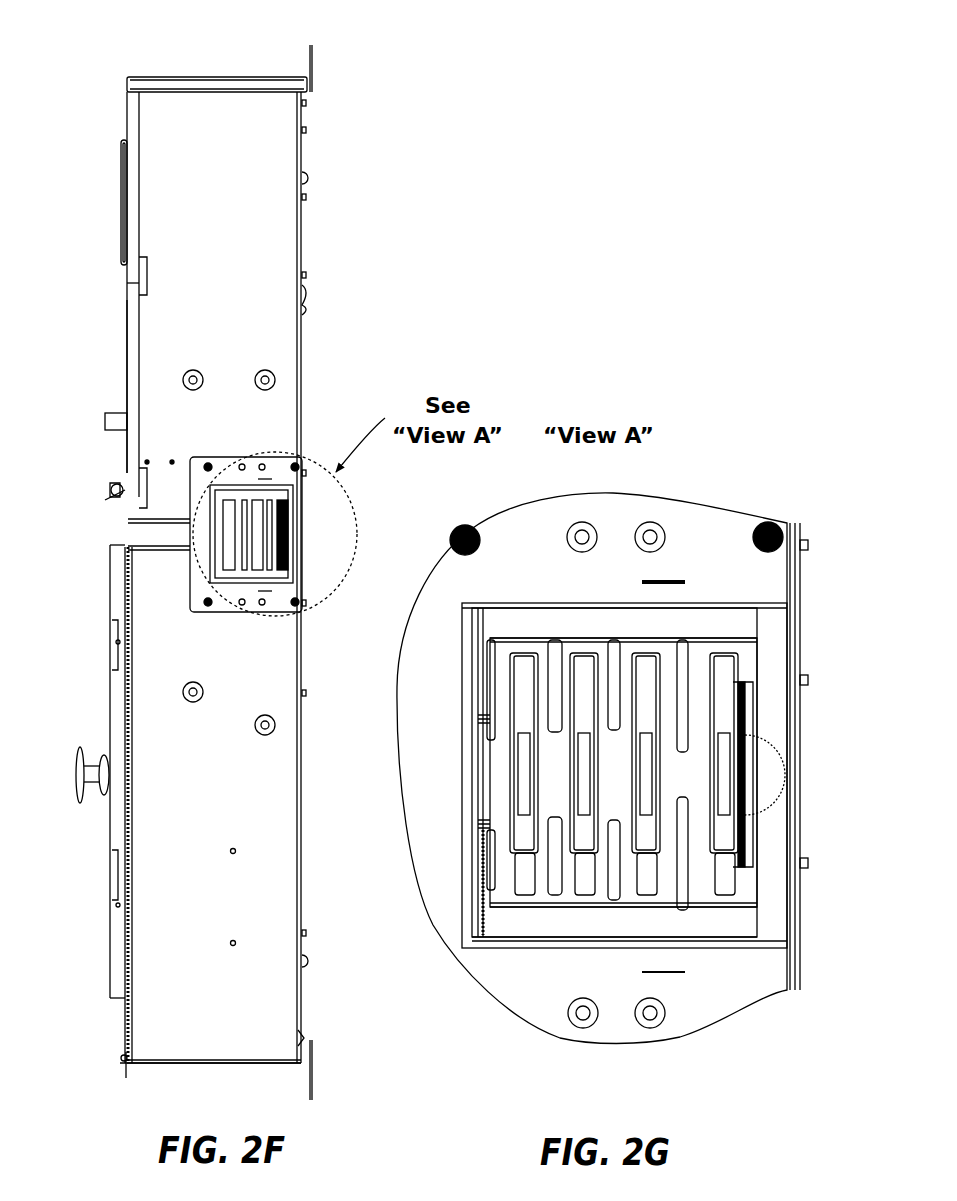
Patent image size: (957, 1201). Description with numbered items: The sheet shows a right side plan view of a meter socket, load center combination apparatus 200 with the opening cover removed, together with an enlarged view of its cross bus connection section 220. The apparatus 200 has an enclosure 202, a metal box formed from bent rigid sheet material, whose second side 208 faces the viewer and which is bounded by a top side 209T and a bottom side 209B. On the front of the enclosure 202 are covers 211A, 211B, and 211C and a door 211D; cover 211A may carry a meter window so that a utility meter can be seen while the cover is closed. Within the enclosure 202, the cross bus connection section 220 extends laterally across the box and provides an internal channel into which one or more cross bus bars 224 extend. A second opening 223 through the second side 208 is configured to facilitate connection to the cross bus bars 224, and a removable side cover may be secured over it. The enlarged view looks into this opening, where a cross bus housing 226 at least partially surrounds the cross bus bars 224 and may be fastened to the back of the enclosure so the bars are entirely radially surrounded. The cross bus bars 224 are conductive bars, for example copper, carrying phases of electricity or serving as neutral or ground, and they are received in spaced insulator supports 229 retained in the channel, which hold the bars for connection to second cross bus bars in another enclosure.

In FIG. 2F, the meter socket, load center combination apparatus 200 is at (316, 56).
In FIG. 2F, the enclosure 202 is at (306, 156).
In FIG. 2F, the second side 208 is at (270, 872).
In FIG. 2F, the top side 209T is at (210, 76).
In FIG. 2F, the bottom side 209B is at (146, 1066).
In FIG. 2F, the cover 211A is at (128, 173).
In FIG. 2F, the cover 211B is at (134, 354).
In FIG. 2F, the cover 211C is at (128, 1020).
In FIG. 2F, the door 211D is at (111, 720).
In FIG. 2F, the cross bus connection section 220 is at (250, 480).
In FIG. 2G, the cross bus connection section 220 is at (705, 600).
In FIG. 2G, the second opening 223 is at (503, 949).
In FIG. 2G, the cross bus bars 224 is at (718, 703).
In FIG. 2G, the cross bus housing 226 is at (573, 938).
In FIG. 2G, the insulator supports 229 is at (600, 648).